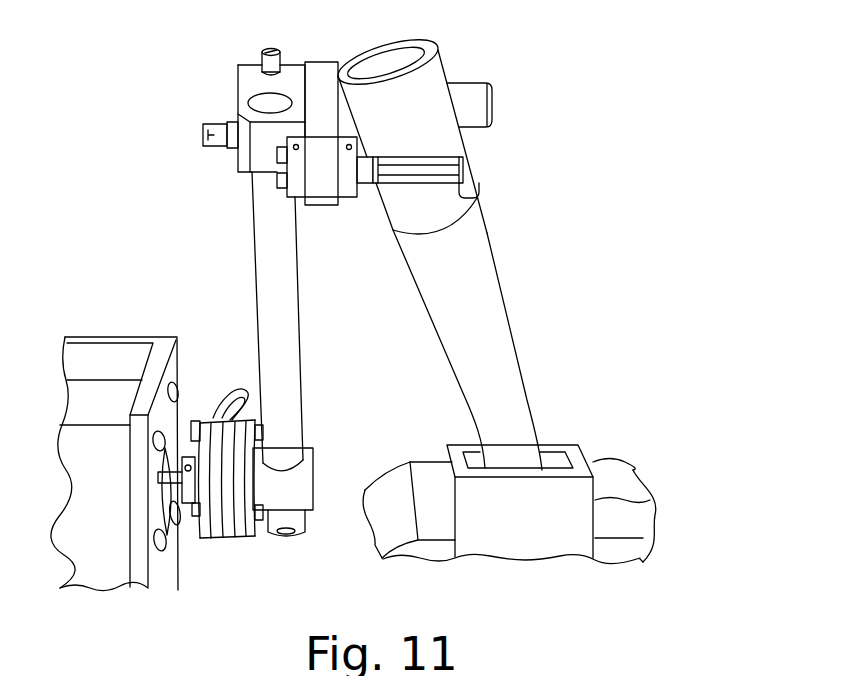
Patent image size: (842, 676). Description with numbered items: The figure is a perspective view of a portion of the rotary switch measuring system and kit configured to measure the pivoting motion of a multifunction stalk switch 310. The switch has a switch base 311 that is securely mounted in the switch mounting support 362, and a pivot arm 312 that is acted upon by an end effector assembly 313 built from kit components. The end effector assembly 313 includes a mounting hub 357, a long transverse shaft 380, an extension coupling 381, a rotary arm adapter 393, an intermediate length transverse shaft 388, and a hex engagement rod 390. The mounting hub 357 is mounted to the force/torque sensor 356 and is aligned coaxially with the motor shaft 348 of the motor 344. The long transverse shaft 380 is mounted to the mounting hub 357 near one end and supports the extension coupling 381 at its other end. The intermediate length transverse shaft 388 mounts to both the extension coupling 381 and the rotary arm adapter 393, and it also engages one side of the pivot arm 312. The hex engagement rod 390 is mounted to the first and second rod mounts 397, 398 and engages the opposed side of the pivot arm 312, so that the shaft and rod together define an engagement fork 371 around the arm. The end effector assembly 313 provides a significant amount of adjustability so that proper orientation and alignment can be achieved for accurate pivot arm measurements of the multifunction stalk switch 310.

The end effector assembly 313 is at (165, 83).
The rotary arm adapter 393 is at (322, 62).
The intermediate length transverse shaft 388 is at (472, 82).
The engagement fork 371 is at (490, 141).
The hex engagement rod 390 is at (462, 193).
The pivot arm 312 is at (500, 268).
The multifunction stalk switch 310 is at (583, 405).
The switch base 311 is at (645, 500).
The switch mounting support 362 is at (638, 560).
The extension coupling 381 is at (238, 163).
The first rod mount 397 is at (295, 198).
The second rod mount 398 is at (347, 200).
The long transverse shaft 380 is at (254, 270).
The force/torque sensor 356 is at (220, 422).
The mounting hub 357 is at (252, 538).
The motor shaft 348 is at (167, 530).
The motor 344 is at (60, 588).